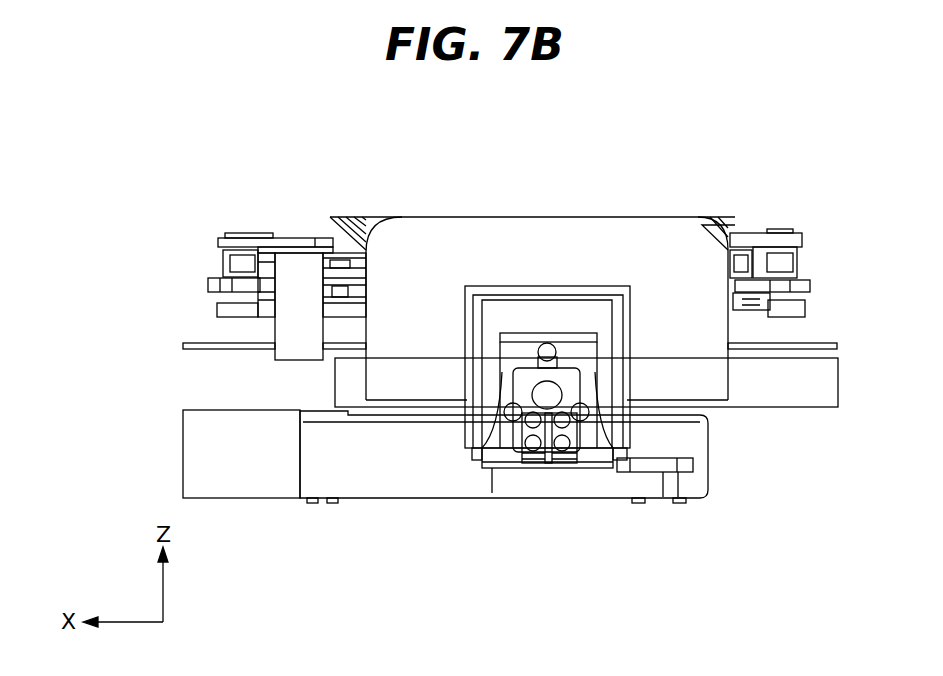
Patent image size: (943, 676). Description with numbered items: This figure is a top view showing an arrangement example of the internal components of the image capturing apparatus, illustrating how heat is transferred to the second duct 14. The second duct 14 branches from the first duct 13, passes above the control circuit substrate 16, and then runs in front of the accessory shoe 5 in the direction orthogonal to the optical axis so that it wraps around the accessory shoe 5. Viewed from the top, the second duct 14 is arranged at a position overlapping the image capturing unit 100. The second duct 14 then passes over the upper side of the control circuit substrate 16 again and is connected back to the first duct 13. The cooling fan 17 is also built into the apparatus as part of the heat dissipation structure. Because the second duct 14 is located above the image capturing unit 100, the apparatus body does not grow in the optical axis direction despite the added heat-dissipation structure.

The accessory shoe 5 is at (543, 313).
The first duct 13 is at (782, 393).
The second duct 14 is at (678, 242).
The control circuit substrate 16 is at (823, 340).
The cooling fan 17 is at (372, 473).
The image capturing unit 100 is at (338, 217).